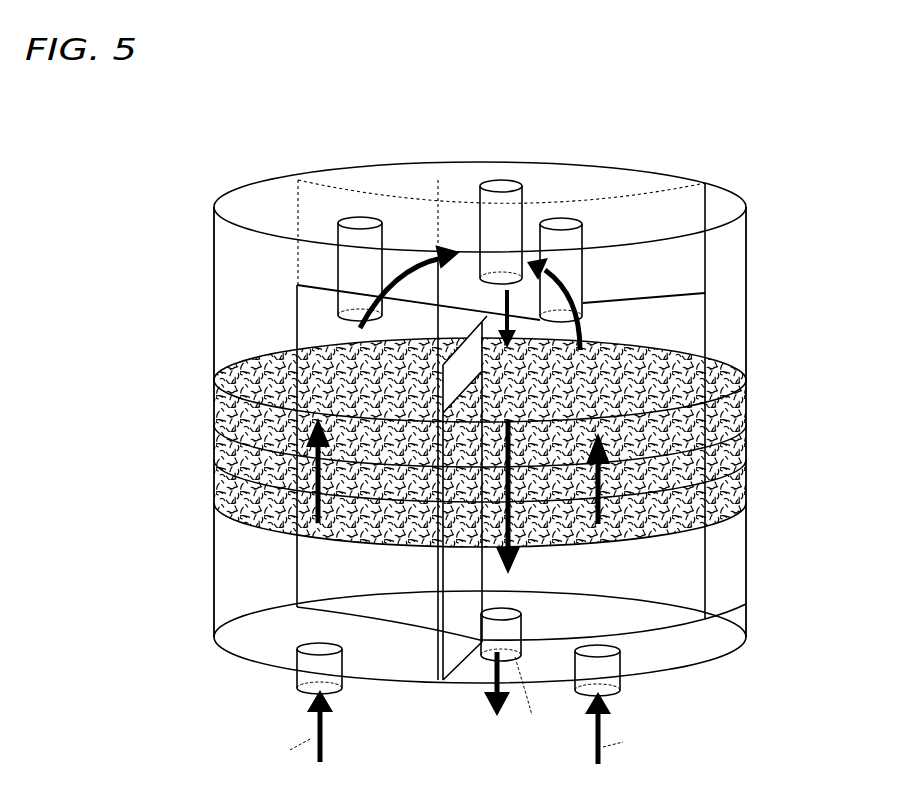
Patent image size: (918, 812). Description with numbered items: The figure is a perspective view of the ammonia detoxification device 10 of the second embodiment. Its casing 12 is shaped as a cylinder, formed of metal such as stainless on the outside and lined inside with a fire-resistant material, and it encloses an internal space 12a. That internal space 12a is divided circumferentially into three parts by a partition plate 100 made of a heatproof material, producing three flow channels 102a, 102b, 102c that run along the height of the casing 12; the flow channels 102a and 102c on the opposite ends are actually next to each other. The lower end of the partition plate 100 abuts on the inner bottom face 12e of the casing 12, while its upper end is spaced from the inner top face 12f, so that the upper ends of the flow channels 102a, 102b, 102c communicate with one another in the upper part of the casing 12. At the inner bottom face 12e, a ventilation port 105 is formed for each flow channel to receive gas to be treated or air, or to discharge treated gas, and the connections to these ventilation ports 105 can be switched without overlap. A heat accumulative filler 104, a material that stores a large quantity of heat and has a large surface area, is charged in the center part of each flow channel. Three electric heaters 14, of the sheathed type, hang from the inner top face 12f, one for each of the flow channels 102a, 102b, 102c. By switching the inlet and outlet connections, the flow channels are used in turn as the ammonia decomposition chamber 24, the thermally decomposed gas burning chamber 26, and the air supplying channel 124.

The ammonia detoxification device 10 is at (160, 110).
The casing 12 is at (215, 262).
The internal space 12a is at (258, 310).
The inner bottom face 12e is at (668, 643).
The inner top face 12f is at (668, 212).
The electric heater 14 is at (536, 240).
The thermally decomposed gas burning chamber 26 is at (583, 205).
The ammonia decomposition chamber 24 is at (270, 565).
The partition plate 100 is at (707, 614).
The flow channel 102a is at (265, 590).
The flow channel 102b is at (533, 213).
The flow channel 102c is at (723, 568).
The heat accumulative filler 104 is at (595, 340).
The ventilation port 105 is at (312, 692).
The air supplying channel 124 is at (728, 552).